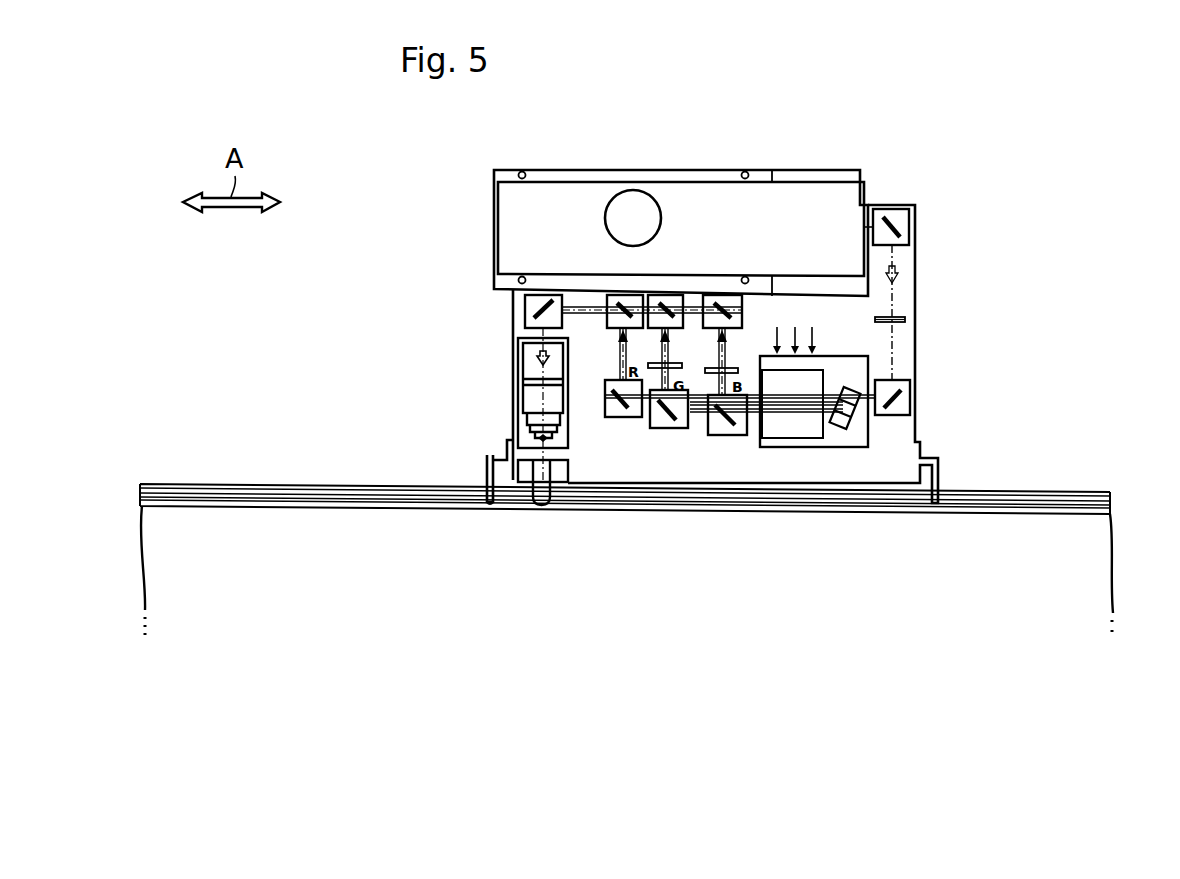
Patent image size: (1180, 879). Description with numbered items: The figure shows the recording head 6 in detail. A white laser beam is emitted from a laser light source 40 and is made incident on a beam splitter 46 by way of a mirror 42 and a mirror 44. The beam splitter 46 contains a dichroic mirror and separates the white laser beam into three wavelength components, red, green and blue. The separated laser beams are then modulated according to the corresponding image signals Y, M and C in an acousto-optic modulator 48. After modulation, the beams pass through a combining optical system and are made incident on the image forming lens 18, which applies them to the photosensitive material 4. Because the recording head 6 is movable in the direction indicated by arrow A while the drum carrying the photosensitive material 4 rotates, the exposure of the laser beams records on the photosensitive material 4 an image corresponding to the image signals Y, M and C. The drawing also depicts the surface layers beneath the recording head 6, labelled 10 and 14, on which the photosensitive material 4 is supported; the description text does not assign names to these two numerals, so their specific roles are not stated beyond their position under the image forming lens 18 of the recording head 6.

The photosensitive material 4 is at (1080, 550).
The recording head 6 is at (928, 244).
The platen 10 is at (1018, 490).
The original document 14 is at (1080, 500).
The image forming lens 18 is at (533, 473).
The laser light source 40 is at (800, 197).
The mirror 42 is at (898, 210).
The mirror 44 is at (910, 399).
The beam splitter 46 is at (850, 390).
The acousto-optic modulator 48 is at (810, 380).